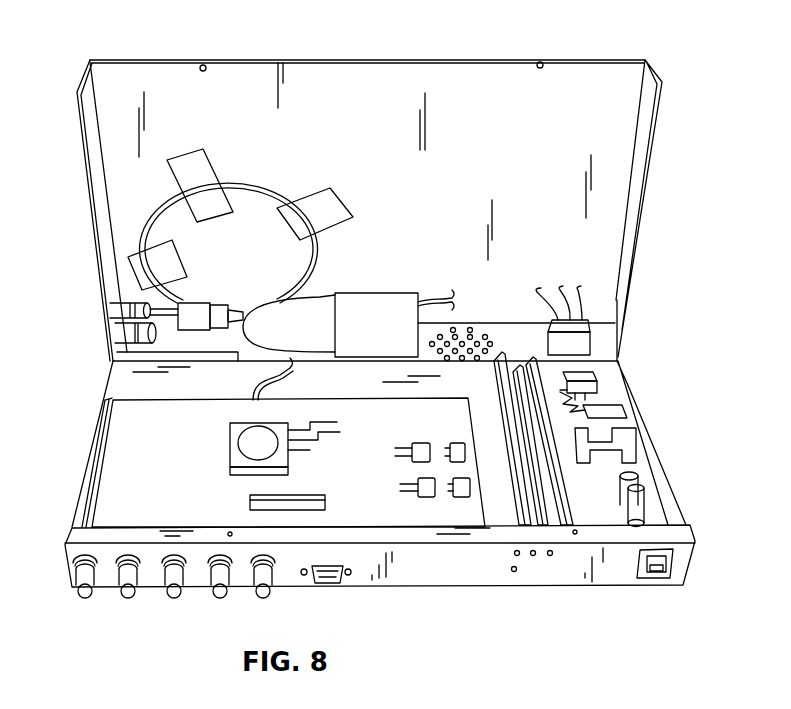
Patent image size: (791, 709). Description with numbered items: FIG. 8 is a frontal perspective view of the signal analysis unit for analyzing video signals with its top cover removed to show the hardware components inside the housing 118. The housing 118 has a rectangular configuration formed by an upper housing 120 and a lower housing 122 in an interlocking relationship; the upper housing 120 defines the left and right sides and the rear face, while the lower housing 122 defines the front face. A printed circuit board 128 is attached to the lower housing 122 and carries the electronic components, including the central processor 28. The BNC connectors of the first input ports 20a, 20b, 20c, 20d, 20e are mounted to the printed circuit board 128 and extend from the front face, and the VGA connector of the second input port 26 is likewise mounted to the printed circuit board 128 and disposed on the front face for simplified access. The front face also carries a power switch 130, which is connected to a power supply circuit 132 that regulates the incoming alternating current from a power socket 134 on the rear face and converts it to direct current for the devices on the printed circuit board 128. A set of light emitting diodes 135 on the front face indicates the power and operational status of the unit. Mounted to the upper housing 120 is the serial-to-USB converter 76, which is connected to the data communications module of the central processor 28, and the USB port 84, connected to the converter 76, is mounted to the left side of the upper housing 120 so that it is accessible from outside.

The first input port 20a is at (86, 598).
The first input port 20b is at (129, 598).
The first input port 20c is at (175, 598).
The first input port 20d is at (220, 598).
The first input port 20e is at (264, 598).
The second input port 26 is at (332, 584).
The central processor 28 is at (250, 440).
The RS-232 to USB converter 76 is at (372, 316).
The USB port 84 is at (112, 313).
The housing 118 is at (618, 358).
The upper housing 120 is at (453, 103).
The lower housing 122 is at (620, 562).
The printed circuit board 128 is at (139, 476).
The power switch 130 is at (657, 575).
The power supply circuit 132 is at (618, 447).
The power socket 134 is at (585, 345).
The light emitting diodes 135 is at (529, 566).